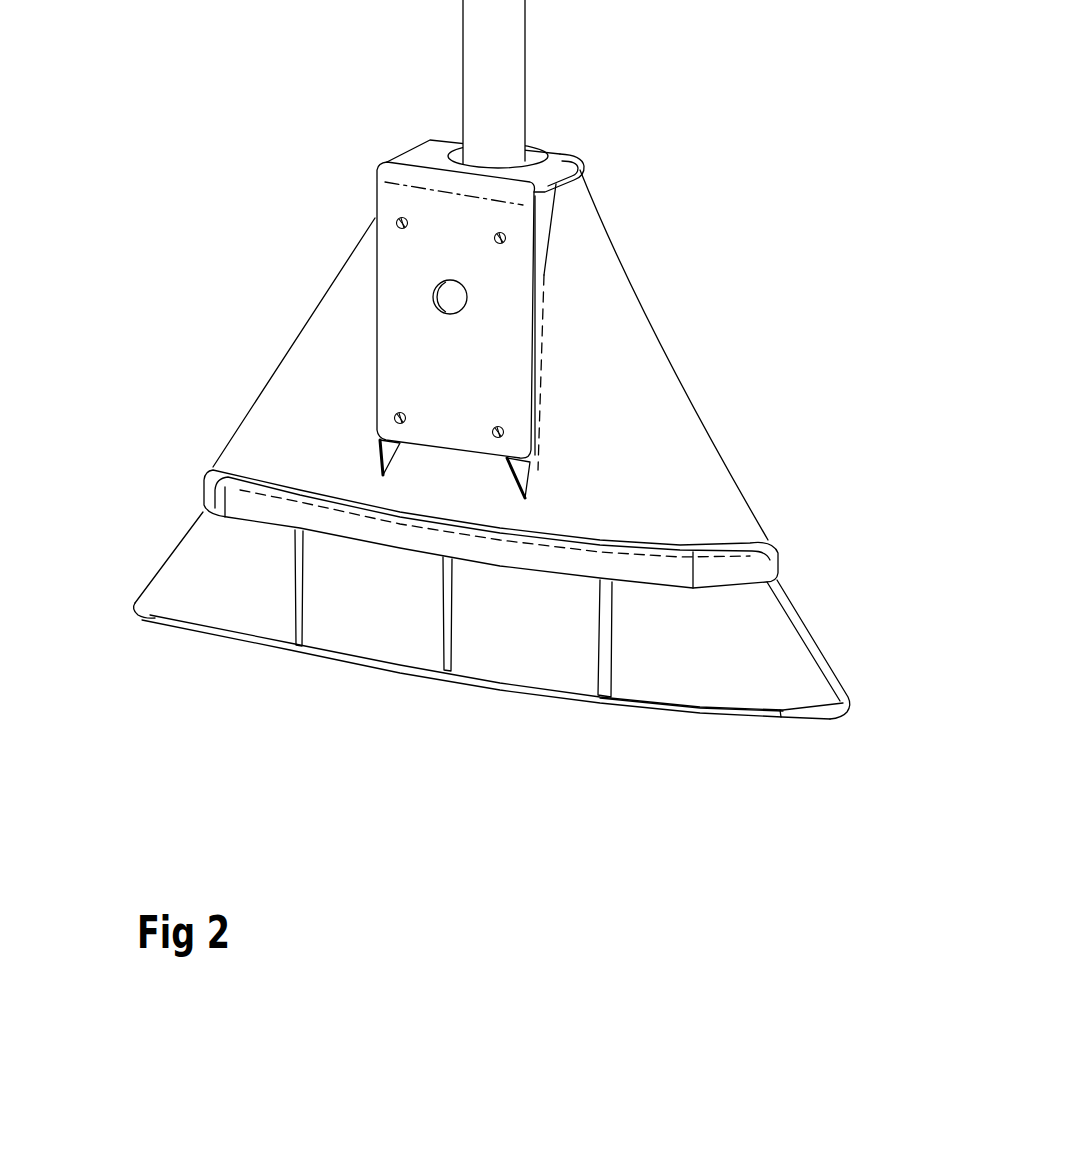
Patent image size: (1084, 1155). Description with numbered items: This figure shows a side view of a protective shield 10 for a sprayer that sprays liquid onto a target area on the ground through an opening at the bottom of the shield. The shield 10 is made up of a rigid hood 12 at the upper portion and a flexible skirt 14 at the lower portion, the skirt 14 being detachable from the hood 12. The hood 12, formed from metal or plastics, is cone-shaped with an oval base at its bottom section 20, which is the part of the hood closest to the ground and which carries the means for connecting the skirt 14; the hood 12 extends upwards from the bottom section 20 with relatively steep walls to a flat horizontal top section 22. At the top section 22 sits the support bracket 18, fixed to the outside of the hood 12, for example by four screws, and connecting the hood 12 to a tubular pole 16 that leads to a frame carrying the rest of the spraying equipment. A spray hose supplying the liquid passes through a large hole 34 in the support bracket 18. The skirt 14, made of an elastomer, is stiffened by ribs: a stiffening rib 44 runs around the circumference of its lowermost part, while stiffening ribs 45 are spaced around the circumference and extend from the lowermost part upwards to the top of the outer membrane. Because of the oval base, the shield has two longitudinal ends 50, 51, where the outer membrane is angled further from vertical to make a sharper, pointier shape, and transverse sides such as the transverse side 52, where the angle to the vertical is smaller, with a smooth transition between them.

The shield 10 is at (748, 268).
The hood 12 is at (651, 390).
The skirt 14 is at (779, 625).
The tubular pole 16 is at (525, 60).
The support bracket 18 is at (571, 153).
The bottom section 20 is at (790, 538).
The top section 22 is at (602, 173).
The large hole 34 is at (425, 271).
The stiffening rib 44 is at (736, 729).
The stiffening ribs 45 is at (794, 672).
The longitudinal end 50 is at (138, 573).
The longitudinal end 51 is at (847, 679).
The transverse side 52 is at (391, 641).